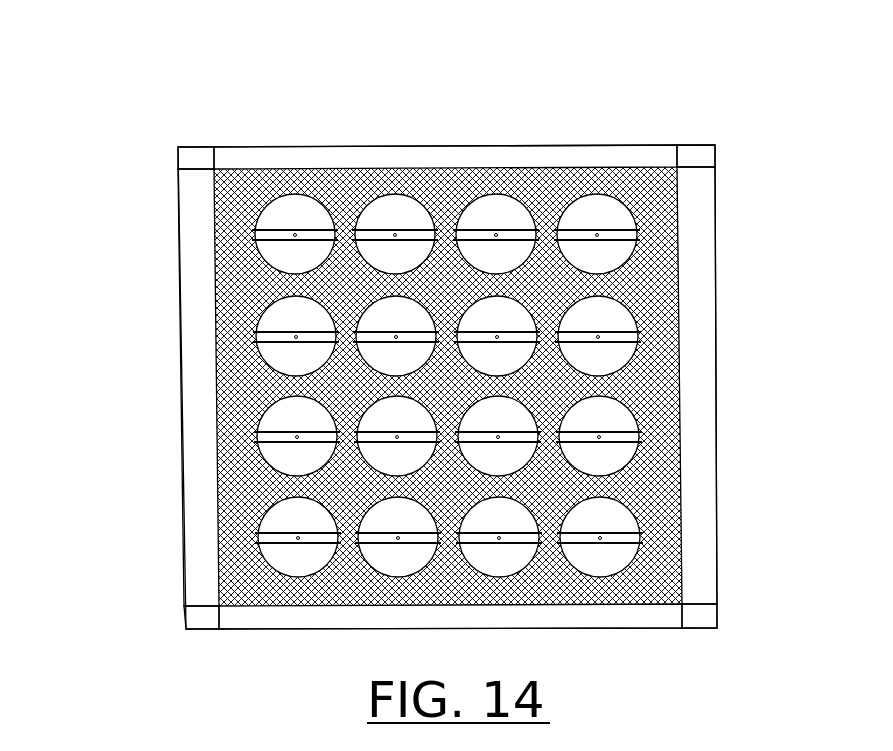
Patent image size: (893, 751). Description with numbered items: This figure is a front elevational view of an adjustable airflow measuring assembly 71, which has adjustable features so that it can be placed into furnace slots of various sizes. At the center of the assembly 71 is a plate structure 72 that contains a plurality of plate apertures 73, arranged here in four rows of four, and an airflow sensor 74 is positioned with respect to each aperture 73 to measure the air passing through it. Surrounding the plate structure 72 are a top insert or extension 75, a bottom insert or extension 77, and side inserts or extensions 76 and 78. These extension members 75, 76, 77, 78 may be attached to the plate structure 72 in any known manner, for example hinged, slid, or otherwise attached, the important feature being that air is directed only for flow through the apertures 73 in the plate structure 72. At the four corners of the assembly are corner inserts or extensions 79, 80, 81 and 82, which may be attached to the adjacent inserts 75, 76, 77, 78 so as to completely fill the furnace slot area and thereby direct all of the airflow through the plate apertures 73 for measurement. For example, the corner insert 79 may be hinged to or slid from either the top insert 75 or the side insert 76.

The adjustable assembly 71 is at (673, 110).
The plate structure 72 is at (447, 193).
The plate apertures 73 is at (307, 197).
The airflow sensors 74 is at (313, 229).
The top insert or extension 75 is at (570, 157).
The side insert or extension 76 is at (690, 426).
The bottom insert or extension 77 is at (582, 620).
The side insert or extension 78 is at (202, 426).
The corner insert or extension 79 is at (697, 156).
The corner insert or extension 80 is at (700, 615).
The corner insert or extension 81 is at (202, 621).
The corner insert or extension 82 is at (198, 160).